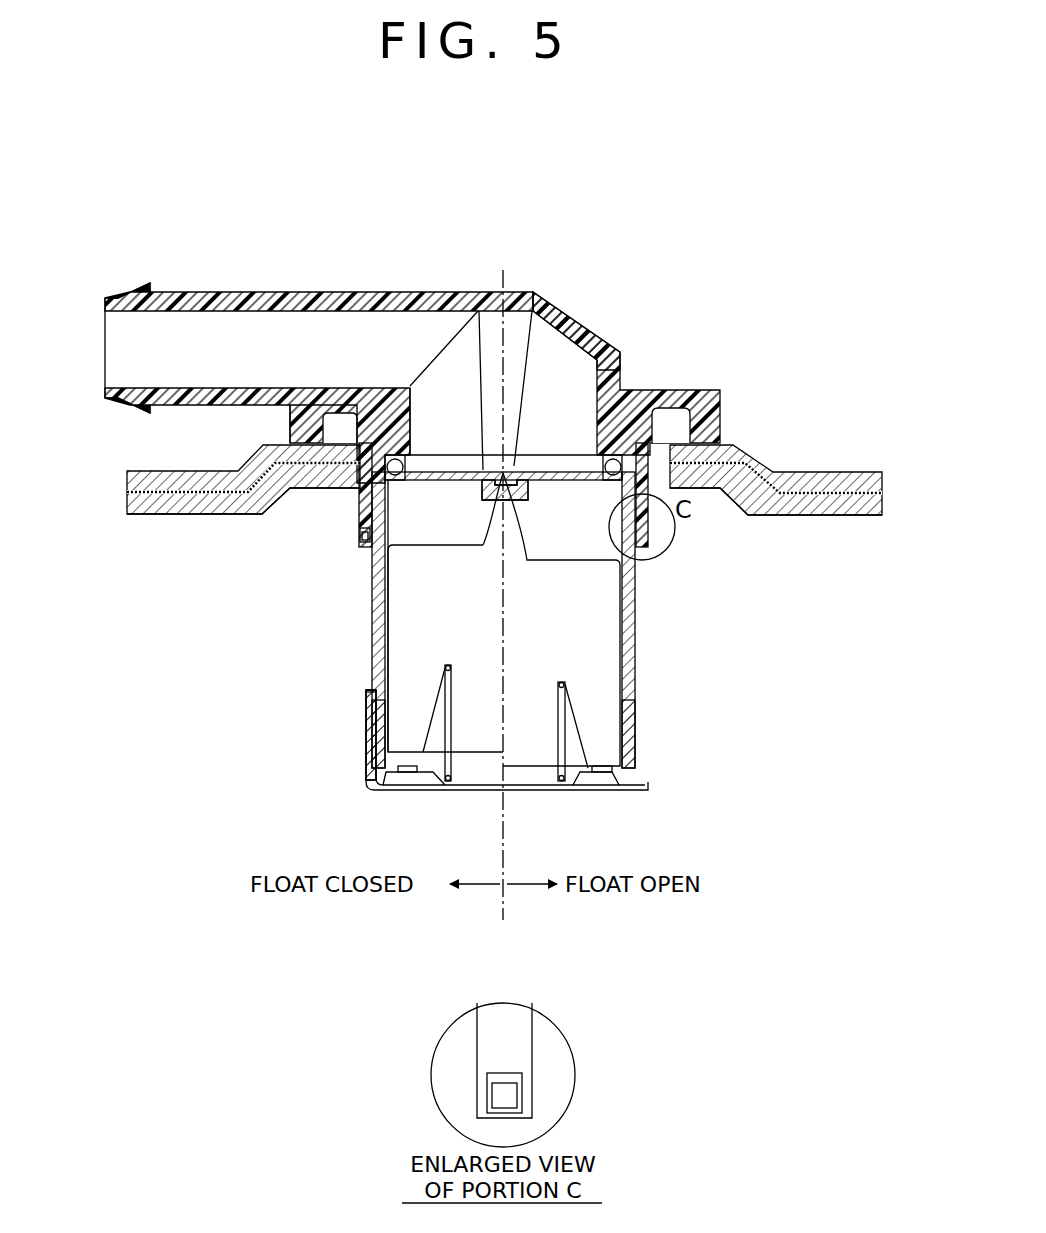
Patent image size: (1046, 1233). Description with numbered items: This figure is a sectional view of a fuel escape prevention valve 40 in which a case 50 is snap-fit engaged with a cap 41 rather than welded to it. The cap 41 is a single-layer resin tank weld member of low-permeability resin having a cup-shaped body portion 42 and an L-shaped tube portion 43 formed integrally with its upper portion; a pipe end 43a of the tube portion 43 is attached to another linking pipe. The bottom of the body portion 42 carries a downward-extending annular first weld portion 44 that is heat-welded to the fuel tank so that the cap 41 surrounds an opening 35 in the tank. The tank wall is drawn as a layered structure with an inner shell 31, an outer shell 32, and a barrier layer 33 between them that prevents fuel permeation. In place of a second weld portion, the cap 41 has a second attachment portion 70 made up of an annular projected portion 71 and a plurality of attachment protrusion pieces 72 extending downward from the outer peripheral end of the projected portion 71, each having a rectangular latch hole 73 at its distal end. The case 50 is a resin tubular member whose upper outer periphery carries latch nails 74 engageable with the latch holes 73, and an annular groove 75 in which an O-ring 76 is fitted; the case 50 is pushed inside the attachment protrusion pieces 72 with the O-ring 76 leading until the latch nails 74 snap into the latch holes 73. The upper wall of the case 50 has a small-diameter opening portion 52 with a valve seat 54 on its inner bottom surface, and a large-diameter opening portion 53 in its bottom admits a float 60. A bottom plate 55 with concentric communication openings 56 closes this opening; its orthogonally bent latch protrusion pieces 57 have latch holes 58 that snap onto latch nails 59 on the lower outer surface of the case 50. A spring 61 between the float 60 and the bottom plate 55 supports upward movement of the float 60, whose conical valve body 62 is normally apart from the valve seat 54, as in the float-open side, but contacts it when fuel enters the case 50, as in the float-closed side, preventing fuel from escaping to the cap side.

The inner shell 31 is at (128, 513).
The outer shell 32 is at (130, 471).
The barrier layer 33 is at (128, 492).
The opening 35 is at (340, 440).
The fuel escape prevention valve 40 is at (612, 333).
The cap 41 is at (386, 291).
The body portion 42 is at (600, 330).
The tube portion 43 is at (266, 291).
The pipe end 43a is at (132, 290).
The first weld portion 44 is at (715, 421).
The case 50 is at (640, 612).
The small-diameter opening portion 52 is at (528, 300).
The large-diameter opening portion 53 is at (636, 748).
The valve seat 54 is at (487, 470).
The bottom plate 55 is at (372, 786).
The communication openings 56 is at (407, 773).
The latch protrusion pieces 57 is at (368, 742).
The latch holes 58 is at (367, 707).
The latch nails 59 is at (367, 697).
The float 60 is at (614, 650).
The spring 61 is at (568, 712).
The valve body 62 is at (650, 532).
The second attachment portion 70 is at (415, 418).
The projected portion 71 is at (405, 450).
The attachment protrusion pieces 72 is at (368, 547).
The latch hole 73 is at (364, 512).
The latch nails 74 is at (365, 533).
The annular groove 75 is at (603, 462).
The O-ring 76 is at (592, 418).